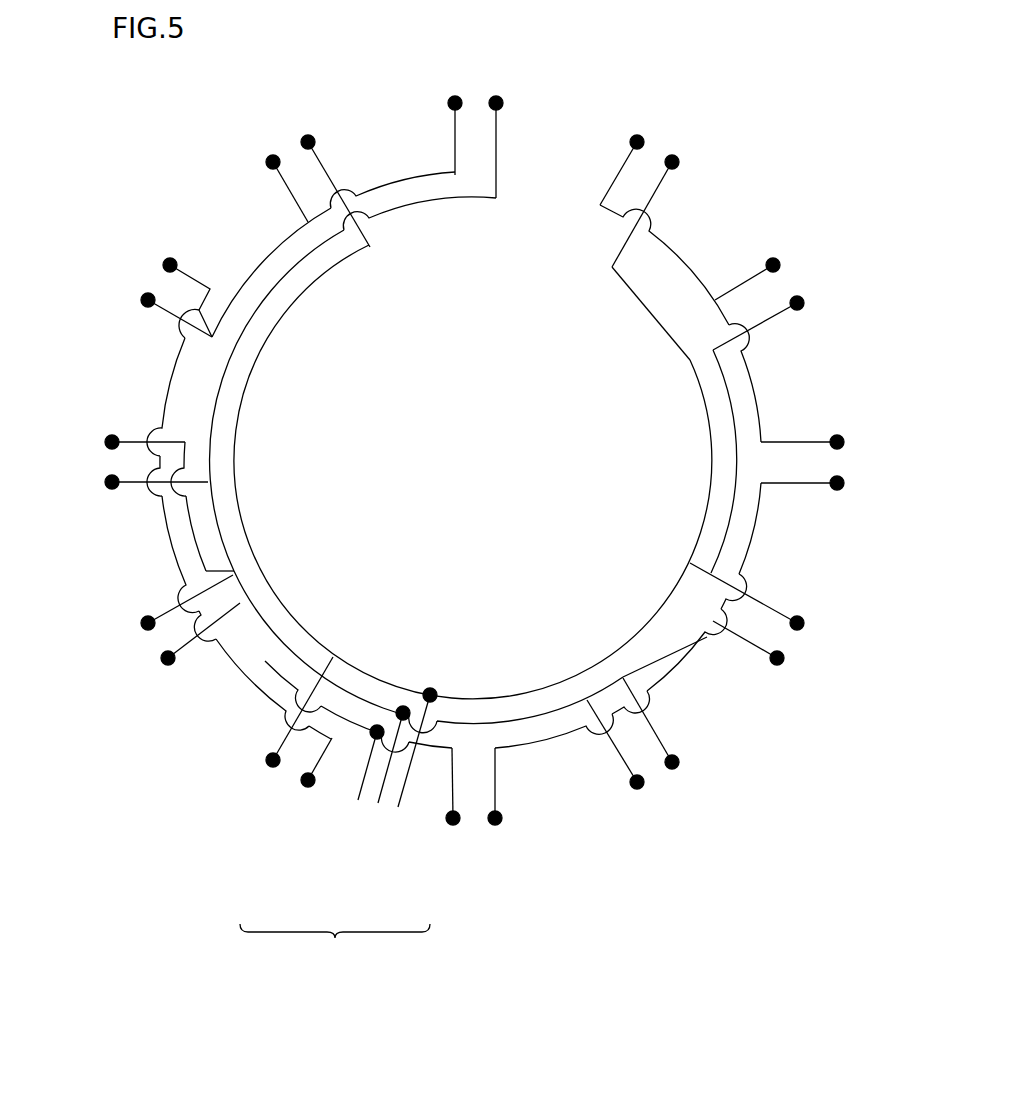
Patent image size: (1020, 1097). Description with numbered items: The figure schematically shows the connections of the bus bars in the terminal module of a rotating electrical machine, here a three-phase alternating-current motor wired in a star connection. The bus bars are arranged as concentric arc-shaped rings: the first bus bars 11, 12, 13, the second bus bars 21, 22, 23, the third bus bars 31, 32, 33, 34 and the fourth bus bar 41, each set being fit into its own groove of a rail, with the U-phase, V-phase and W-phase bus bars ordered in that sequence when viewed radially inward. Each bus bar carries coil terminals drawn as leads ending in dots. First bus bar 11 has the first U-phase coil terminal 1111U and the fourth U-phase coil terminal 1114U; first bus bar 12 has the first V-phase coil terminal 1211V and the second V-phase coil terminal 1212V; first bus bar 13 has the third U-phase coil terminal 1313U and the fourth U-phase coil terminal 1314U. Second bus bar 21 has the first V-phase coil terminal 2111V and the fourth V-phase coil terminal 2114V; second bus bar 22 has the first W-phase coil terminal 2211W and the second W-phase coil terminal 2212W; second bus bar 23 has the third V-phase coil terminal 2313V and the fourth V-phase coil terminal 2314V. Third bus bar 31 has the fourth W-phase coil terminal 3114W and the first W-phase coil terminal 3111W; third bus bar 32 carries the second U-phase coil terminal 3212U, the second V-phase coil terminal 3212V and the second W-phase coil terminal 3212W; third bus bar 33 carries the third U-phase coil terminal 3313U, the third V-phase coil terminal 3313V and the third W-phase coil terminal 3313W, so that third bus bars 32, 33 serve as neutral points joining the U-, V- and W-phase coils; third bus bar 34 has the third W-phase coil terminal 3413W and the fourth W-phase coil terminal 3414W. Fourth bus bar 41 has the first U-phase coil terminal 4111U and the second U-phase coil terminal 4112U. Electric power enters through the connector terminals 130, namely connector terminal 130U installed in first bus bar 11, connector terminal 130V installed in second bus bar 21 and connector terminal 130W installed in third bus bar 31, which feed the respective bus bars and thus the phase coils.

The first bus bar 11 is at (473, 698).
The first bus bar 12 is at (233, 461).
The first bus bar 13 is at (710, 413).
The second bus bar 21 is at (287, 647).
The second bus bar 22 is at (247, 328).
The second bus bar 23 is at (737, 462).
The third bus bar 31 is at (380, 684).
The third bus bar 32 is at (405, 182).
The third bus bar 33 is at (690, 270).
The third bus bar 34 is at (680, 663).
The fourth bus bar 41 is at (247, 680).
The second W-phase coil terminal 3212W is at (430, 125).
The second W-phase coil terminal 2212W is at (517, 136).
The second V-phase coil terminal 1212V is at (305, 180).
The second V-phase coil terminal 3212V is at (254, 181).
The second U-phase coil terminal 4112U is at (151, 275).
The second U-phase coil terminal 3212U is at (143, 307).
The first W-phase coil terminal 3111W is at (107, 441).
The first W-phase coil terminal 2211W is at (119, 481).
The first V-phase coil terminal 2111V is at (152, 606).
The first V-phase coil terminal 1211V is at (166, 638).
The first U-phase coil terminal 1111U is at (265, 720).
The first U-phase coil terminal 4111U is at (285, 775).
The fourth W-phase coil terminal 3114W is at (434, 800).
The fourth W-phase coil terminal 3414W is at (512, 800).
The fourth V-phase coil terminal 2114V is at (645, 758).
The fourth V-phase coil terminal 2314V is at (682, 732).
The fourth U-phase coil terminal 1114U is at (781, 650).
The fourth U-phase coil terminal 1314U is at (777, 603).
The third W-phase coil terminal 3313W is at (836, 442).
The third W-phase coil terminal 3413W is at (836, 484).
The third V-phase coil terminal 3313V is at (781, 270).
The third V-phase coil terminal 2313V is at (790, 314).
The third U-phase coil terminal 1313U is at (675, 204).
The third U-phase coil terminal 3313U is at (649, 159).
The connector terminals 130 is at (335, 941).
The connector terminal 130U is at (399, 804).
The connector terminal 130V is at (378, 800).
The connector terminal 130W is at (358, 793).